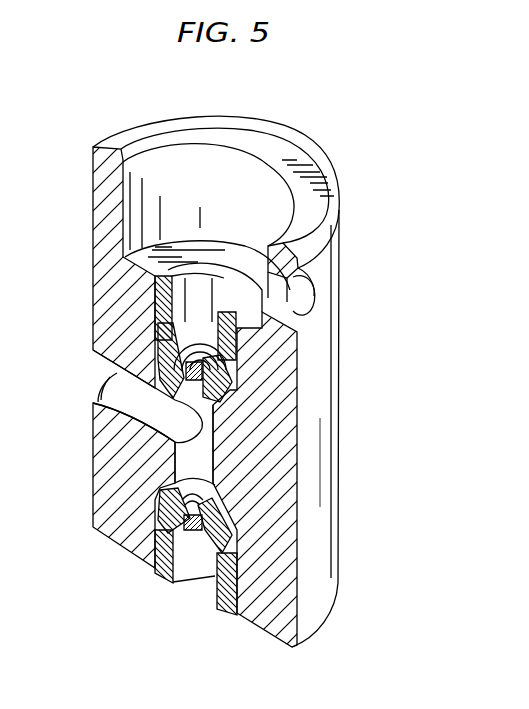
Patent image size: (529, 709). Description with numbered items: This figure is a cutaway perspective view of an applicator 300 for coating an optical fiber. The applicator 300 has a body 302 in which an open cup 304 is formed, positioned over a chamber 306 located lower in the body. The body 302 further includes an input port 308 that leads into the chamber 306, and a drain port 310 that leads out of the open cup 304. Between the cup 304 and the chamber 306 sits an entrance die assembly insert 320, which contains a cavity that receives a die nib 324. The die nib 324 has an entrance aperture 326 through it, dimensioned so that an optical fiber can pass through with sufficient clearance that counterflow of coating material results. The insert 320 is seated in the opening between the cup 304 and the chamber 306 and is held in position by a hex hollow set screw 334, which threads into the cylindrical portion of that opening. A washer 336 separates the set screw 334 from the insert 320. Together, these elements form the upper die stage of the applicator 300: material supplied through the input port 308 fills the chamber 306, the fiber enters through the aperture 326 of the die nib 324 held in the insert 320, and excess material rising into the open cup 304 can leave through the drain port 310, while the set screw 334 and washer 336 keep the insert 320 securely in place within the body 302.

The applicator 300 is at (275, 112).
The body 302 is at (316, 585).
The open cup 304 is at (268, 217).
The chamber 306 is at (211, 470).
The input port 308 is at (100, 380).
The drain port 310 is at (293, 303).
The entrance die assembly insert 320 is at (205, 373).
The die nib 324 is at (130, 400).
The entrance aperture 326 is at (182, 333).
The hex hollow set screw 334 is at (173, 276).
The washer 336 is at (222, 365).